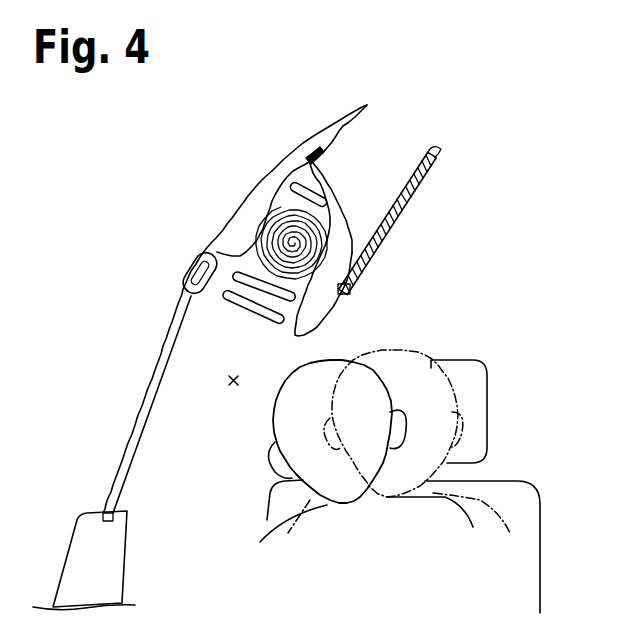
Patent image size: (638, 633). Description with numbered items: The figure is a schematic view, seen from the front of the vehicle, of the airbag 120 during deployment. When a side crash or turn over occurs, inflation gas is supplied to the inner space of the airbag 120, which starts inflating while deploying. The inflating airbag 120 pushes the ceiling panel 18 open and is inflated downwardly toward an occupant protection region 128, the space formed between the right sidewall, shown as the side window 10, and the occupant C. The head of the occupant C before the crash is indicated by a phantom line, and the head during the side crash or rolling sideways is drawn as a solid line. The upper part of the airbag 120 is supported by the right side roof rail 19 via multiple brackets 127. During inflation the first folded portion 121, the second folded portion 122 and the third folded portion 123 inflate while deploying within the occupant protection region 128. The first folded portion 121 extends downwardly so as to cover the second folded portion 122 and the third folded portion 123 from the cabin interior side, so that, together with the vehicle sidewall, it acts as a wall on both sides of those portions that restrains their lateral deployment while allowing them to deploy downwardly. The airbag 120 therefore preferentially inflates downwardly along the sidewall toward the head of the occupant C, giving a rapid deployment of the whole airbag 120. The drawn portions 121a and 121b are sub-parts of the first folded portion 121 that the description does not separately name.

The right side roof rail 19 is at (272, 154).
The side window 10 is at (128, 437).
The airbag 120 is at (247, 229).
The second folded portion 122 is at (207, 262).
The third folded portion 123 is at (240, 302).
The brackets 127 is at (309, 154).
The occupant protection region 128 is at (229, 380).
The ceiling panel 18 is at (427, 180).
The first folded portion 121 is at (428, 248).
The upper guide portion 121a is at (344, 204).
The lower guide portion 121b is at (335, 305).
The occupant C is at (344, 354).